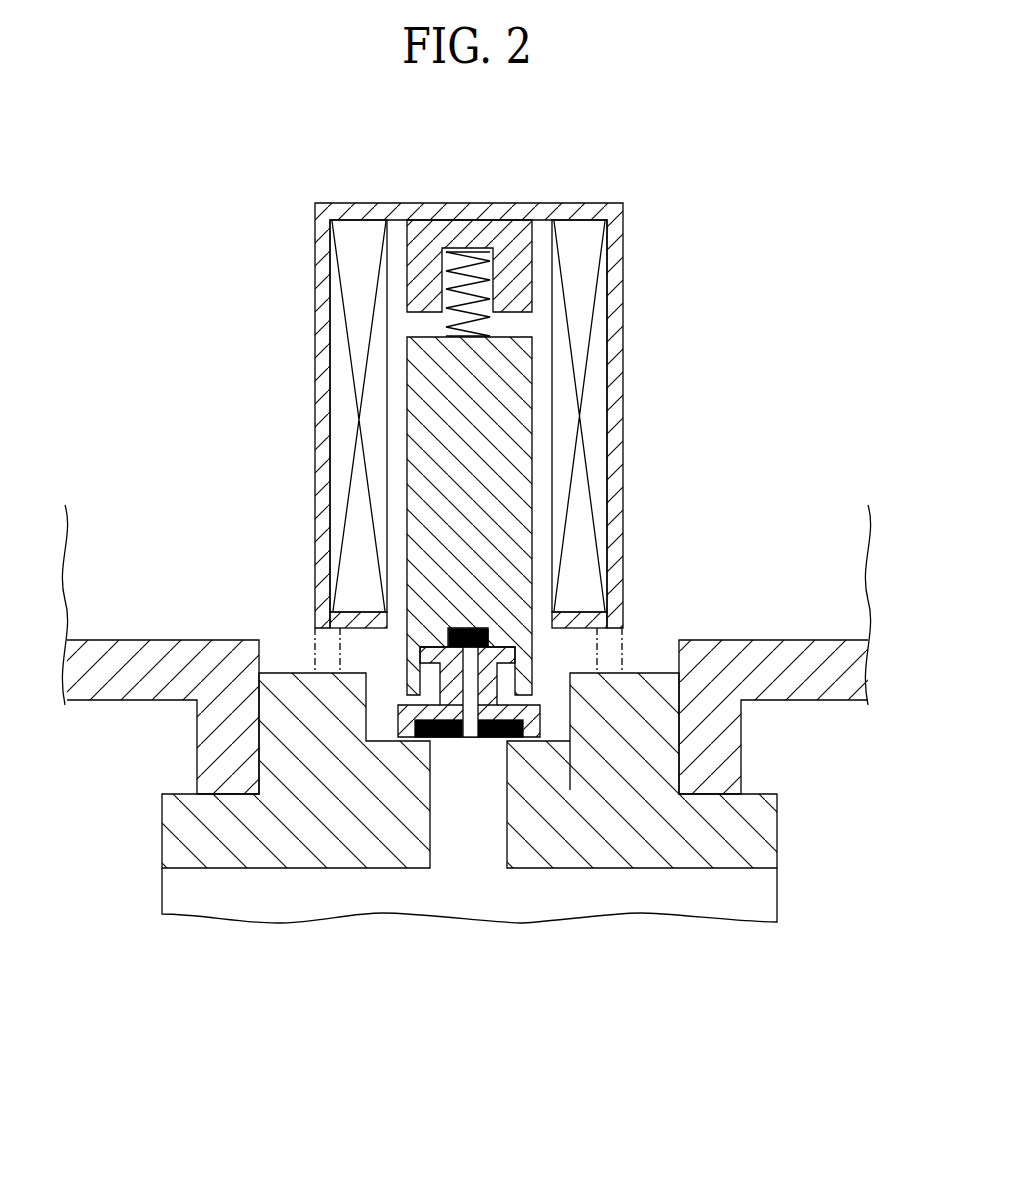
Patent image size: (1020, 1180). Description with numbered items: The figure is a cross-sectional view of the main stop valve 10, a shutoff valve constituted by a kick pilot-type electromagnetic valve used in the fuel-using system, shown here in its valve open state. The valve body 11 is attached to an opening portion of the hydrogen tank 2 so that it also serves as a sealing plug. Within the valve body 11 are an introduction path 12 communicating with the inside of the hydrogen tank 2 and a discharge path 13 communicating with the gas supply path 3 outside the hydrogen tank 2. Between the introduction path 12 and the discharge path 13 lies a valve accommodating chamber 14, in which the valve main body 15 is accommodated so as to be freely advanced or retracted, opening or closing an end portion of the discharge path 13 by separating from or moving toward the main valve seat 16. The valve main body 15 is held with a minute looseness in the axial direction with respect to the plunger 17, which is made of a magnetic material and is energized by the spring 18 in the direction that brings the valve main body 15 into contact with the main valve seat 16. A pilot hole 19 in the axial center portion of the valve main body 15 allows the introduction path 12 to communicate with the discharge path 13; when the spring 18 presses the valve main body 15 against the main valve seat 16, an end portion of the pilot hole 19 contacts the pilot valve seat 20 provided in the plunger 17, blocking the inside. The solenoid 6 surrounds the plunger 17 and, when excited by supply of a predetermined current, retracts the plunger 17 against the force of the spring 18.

The hydrogen tank 2 is at (843, 700).
The gas supply path 3 is at (243, 898).
The solenoid 6 is at (608, 290).
The main stop valve 10 is at (634, 330).
The valve body 11 is at (655, 862).
The introduction path 12 is at (603, 646).
The discharge path 13 is at (432, 843).
The valve accommodating chamber 14 is at (558, 732).
The valve main body 15 is at (402, 722).
The main valve seat 16 is at (515, 736).
The plunger 17 is at (522, 465).
The spring 18 is at (466, 247).
The pilot hole 19 is at (472, 682).
The pilot valve seat 20 is at (462, 632).